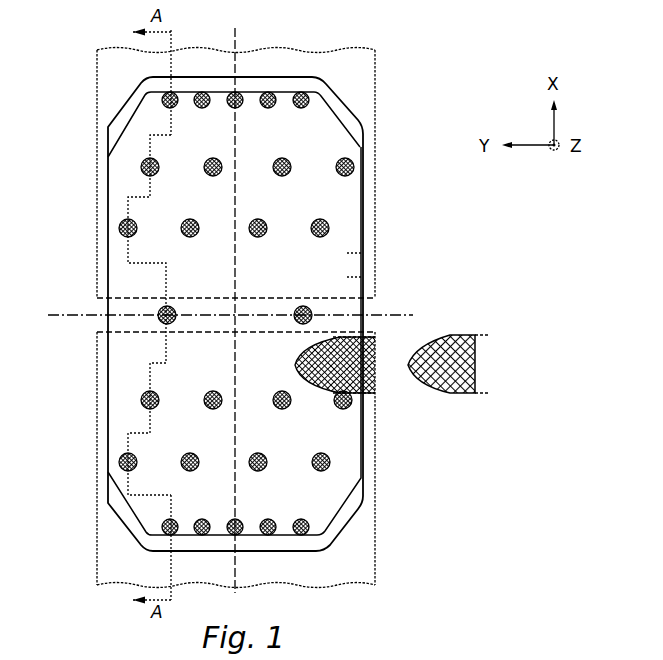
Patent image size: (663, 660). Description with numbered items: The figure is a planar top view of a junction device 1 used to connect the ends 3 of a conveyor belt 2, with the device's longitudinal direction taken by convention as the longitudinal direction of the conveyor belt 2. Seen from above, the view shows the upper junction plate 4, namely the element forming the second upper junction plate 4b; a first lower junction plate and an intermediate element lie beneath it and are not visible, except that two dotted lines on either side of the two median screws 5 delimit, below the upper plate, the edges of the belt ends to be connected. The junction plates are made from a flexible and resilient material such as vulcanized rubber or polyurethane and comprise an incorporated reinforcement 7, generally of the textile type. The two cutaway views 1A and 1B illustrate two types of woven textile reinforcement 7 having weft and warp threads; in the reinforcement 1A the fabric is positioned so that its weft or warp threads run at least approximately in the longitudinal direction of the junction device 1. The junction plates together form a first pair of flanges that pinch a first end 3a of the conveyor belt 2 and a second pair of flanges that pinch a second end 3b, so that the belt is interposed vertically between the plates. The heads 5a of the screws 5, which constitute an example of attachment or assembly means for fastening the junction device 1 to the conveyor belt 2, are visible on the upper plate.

The junction device 1 is at (285, 78).
The cutaway view of reinforcement 1A is at (373, 403).
The cutaway view of reinforcement 1B is at (451, 336).
The conveyor belt 2 is at (363, 77).
The ends of the conveyor belt 3 is at (97, 222).
The first end of the conveyor belt 3a is at (102, 268).
The second end of the conveyor belt 3b is at (102, 364).
The upper junction plate 4 is at (363, 253).
The second upper junction plate 4b is at (363, 277).
The screws 5 is at (358, 160).
The heads of the screws 5a is at (364, 183).
The incorporated reinforcement 7 is at (377, 339).